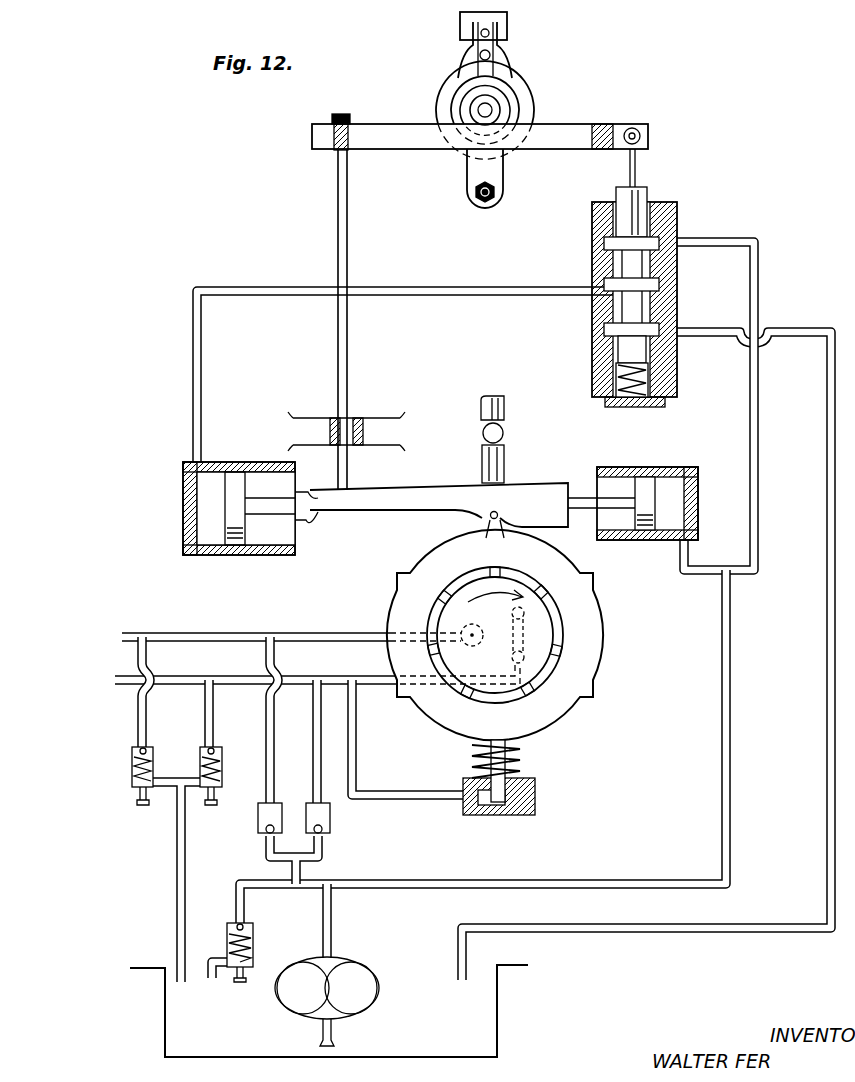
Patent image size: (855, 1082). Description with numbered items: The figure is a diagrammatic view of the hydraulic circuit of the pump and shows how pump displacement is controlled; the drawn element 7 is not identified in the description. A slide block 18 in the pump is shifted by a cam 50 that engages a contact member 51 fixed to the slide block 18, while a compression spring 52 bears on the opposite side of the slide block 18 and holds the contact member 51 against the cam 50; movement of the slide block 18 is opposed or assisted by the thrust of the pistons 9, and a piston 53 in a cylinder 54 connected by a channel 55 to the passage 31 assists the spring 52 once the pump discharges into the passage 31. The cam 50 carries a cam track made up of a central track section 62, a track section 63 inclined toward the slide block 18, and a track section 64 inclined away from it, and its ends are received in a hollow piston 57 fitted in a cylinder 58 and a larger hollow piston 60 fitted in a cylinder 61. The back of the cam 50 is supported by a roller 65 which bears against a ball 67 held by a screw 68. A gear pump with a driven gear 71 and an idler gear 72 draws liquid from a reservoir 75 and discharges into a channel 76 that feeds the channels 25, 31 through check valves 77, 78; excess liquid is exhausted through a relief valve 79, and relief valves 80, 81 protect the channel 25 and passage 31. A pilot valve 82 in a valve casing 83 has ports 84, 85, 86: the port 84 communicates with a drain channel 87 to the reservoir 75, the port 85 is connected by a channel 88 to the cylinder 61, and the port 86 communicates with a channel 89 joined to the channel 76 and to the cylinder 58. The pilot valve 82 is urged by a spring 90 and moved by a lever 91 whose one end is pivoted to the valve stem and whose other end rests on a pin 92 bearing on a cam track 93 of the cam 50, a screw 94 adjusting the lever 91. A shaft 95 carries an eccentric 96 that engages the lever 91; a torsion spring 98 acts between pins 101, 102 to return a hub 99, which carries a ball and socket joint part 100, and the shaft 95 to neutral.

The rotor 7 is at (548, 630).
The pistons 9 is at (531, 693).
The slide block 18 is at (588, 643).
The channel 25 is at (327, 637).
The passage 31 is at (337, 678).
The cam 50 is at (528, 492).
The contact member 51 is at (490, 534).
The compression spring 52 is at (521, 750).
The piston 53 is at (496, 742).
The cylinder 54 is at (495, 815).
The channel 55 is at (420, 790).
The hollow piston 57 is at (642, 540).
The cylinder 58 is at (680, 505).
The hollow piston 60 is at (240, 556).
The cylinder 61 is at (182, 503).
The central track section 62 is at (495, 512).
The track section 63 is at (530, 524).
The track section 64 is at (466, 506).
The roller 65 is at (482, 463).
The ball 67 is at (483, 433).
The screw 68 is at (480, 408).
The driven gear 71 is at (292, 1006).
The idler gear 72 is at (364, 1006).
The reservoir 75 is at (497, 1022).
The channel 76 is at (722, 620).
The check valve 77 is at (262, 824).
The check valve 78 is at (328, 824).
The relief valve 79 is at (252, 929).
The relief valve 80 is at (144, 750).
The relief valve 81 is at (212, 752).
The pilot valve 82 is at (642, 192).
The valve casing 83 is at (678, 213).
The port 84 is at (604, 333).
The port 85 is at (660, 287).
The port 86 is at (604, 243).
The drain channel 87 is at (772, 332).
The channel 88 is at (468, 291).
The channel 89 is at (754, 257).
The spring 90 is at (660, 375).
The lever 91 is at (480, 136).
The pin 92 is at (338, 336).
The cam track 93 is at (322, 512).
The screw 94 is at (332, 122).
The shaft 95 is at (515, 104).
The eccentric 96 is at (470, 110).
The torsion spring 98 is at (458, 90).
The hub 99 is at (517, 78).
The ball and socket joint part 100 is at (498, 195).
The pin 101 is at (478, 33).
The pin 102 is at (478, 55).